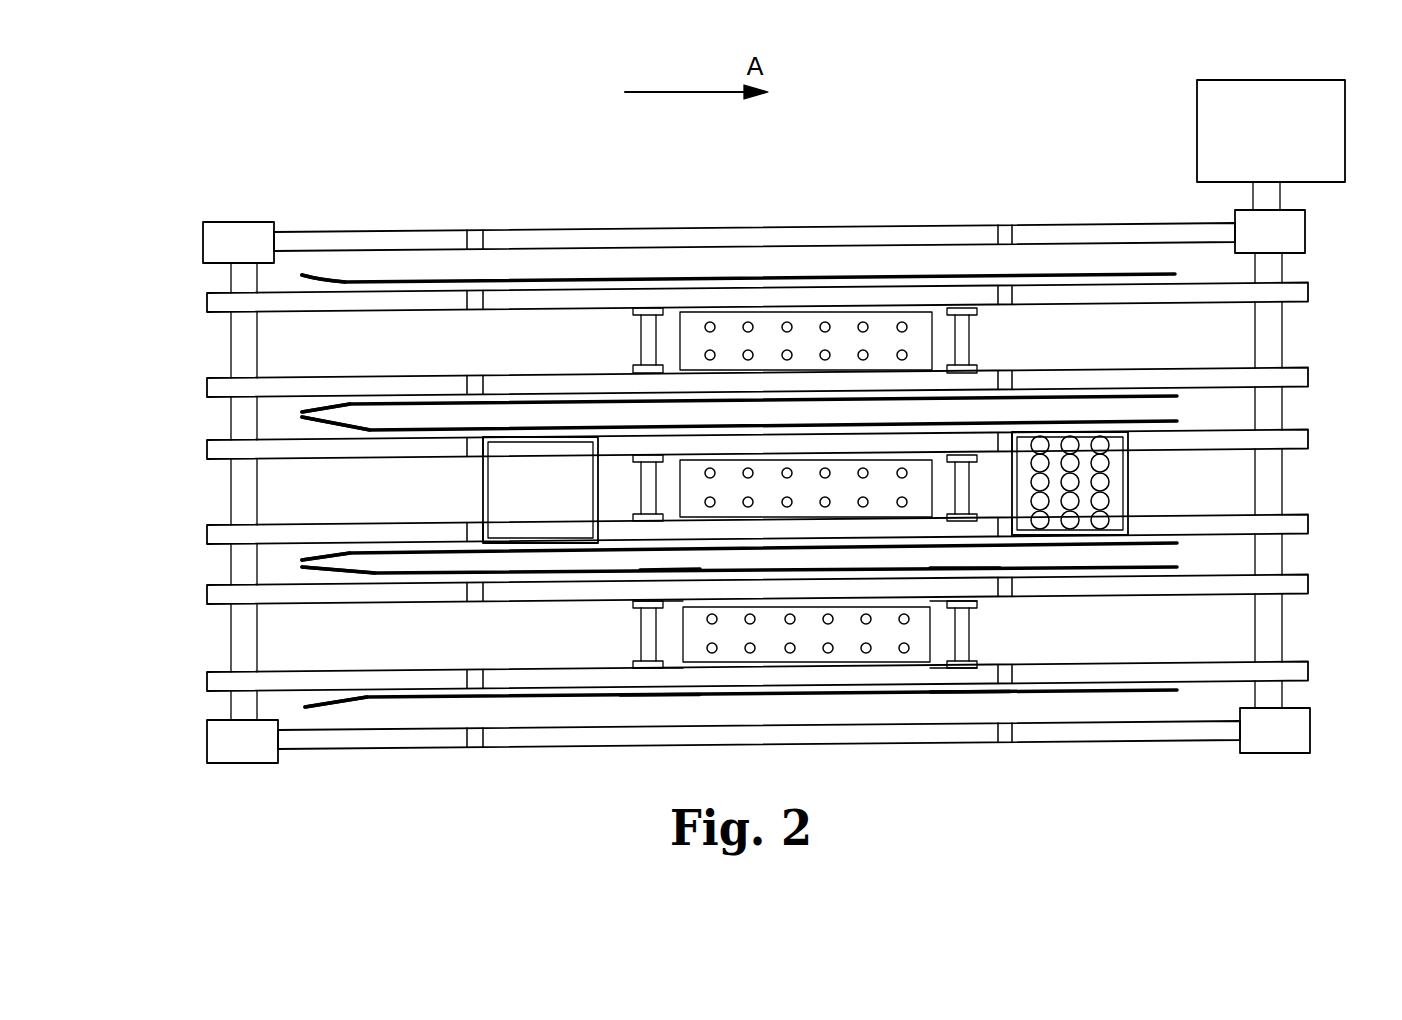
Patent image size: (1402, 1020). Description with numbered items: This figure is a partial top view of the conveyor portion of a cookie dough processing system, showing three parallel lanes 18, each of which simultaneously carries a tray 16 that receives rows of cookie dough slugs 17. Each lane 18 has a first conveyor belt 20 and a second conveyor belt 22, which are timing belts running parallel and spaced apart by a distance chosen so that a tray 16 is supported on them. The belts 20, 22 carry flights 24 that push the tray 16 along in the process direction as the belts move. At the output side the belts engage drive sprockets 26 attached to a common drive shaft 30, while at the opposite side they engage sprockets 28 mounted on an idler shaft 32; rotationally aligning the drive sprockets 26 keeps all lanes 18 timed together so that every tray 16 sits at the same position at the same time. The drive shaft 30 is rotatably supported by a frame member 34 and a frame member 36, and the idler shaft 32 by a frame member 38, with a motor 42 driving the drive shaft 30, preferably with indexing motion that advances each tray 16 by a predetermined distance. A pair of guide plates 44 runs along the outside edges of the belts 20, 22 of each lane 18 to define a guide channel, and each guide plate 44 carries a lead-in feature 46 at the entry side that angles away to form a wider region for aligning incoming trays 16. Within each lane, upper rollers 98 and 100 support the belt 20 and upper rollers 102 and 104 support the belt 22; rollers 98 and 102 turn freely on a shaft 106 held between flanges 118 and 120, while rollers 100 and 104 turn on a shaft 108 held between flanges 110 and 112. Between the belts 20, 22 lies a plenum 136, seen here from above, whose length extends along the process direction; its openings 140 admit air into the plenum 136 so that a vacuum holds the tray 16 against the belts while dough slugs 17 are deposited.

The tray 16 is at (483, 482).
The cookie dough slugs 17 is at (1135, 616).
The lane 18 is at (183, 351).
The first conveyor belt 20 is at (1297, 380).
The second conveyor belt 22 is at (1297, 291).
The flights 24 is at (474, 302).
The drive sprockets 26 is at (1292, 572).
The sprockets 28 is at (218, 583).
The drive shaft 30 is at (1277, 475).
The idler shaft 32 is at (243, 655).
The frame member 34 is at (1297, 233).
The frame member 36 is at (1305, 722).
The frame member 38 is at (252, 226).
The motor 42 is at (1328, 135).
The guide plates 44 is at (395, 279).
The lead-in feature 46 is at (322, 280).
The upper roller 98 is at (638, 665).
The upper roller 100 is at (977, 658).
The upper roller 102 is at (643, 602).
The upper roller 104 is at (978, 599).
The shaft 106 is at (645, 343).
The shaft 108 is at (965, 330).
The flange 110 is at (963, 566).
The flange 112 is at (975, 690).
The flange 118 is at (652, 698).
The flange 120 is at (668, 575).
The plenum 136 is at (808, 665).
The openings 140 is at (790, 625).